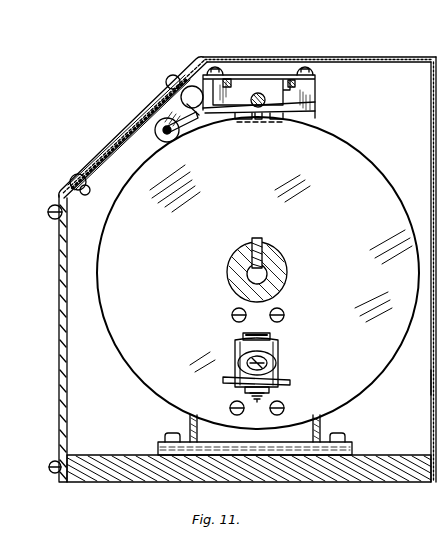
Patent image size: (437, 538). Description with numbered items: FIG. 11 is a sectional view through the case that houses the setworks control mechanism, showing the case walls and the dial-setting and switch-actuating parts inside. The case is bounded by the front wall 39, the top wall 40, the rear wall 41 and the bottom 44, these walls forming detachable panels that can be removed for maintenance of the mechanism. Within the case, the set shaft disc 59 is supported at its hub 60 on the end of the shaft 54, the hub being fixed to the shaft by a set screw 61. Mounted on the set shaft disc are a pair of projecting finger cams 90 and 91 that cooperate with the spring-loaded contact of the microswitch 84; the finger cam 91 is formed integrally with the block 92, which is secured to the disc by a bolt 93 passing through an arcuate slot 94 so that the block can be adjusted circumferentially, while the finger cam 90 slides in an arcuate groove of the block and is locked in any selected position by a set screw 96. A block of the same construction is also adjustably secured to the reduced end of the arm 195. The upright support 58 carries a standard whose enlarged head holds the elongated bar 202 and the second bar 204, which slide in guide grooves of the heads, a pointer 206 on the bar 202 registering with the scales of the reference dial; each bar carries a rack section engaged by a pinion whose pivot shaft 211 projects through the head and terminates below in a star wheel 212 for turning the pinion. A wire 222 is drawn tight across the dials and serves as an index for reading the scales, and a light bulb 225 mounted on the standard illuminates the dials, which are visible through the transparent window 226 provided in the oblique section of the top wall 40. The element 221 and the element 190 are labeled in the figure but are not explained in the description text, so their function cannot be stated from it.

The front wall 39 is at (58, 343).
The top wall 40 is at (380, 58).
The rear wall 41 is at (389, 371).
The bottom 44 is at (372, 478).
The shaft 54 is at (275, 288).
The upright support 58 is at (322, 440).
The set shaft disc 59 is at (117, 353).
The hub 60 is at (287, 262).
The set screw 61 is at (262, 245).
The microswitch 84 is at (234, 318).
The finger cam 90 is at (290, 382).
The finger cam 91 is at (272, 338).
The block 92 is at (278, 375).
The bolt 93 is at (275, 357).
The arcuate slot 94 is at (240, 363).
The set screw 96 is at (257, 402).
The element 190 is at (132, 533).
The arm 195 is at (60, 530).
The elongated bar 202 is at (293, 80).
The second bar 204 is at (225, 74).
The pointer 206 is at (185, 127).
The pivot shaft 211 is at (258, 121).
The star wheel 212 is at (315, 117).
The pivot pin 221 is at (258, 94).
The wire 222 is at (153, 125).
The light bulb 225 is at (183, 89).
The transparent window 226 is at (108, 148).